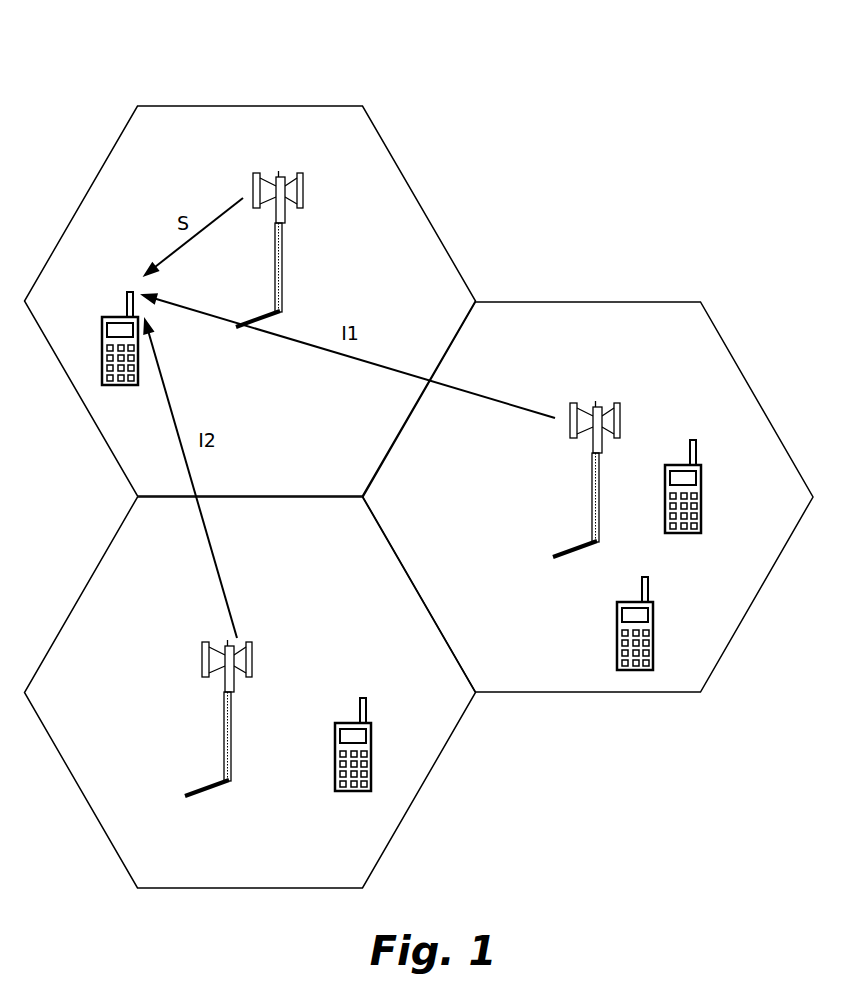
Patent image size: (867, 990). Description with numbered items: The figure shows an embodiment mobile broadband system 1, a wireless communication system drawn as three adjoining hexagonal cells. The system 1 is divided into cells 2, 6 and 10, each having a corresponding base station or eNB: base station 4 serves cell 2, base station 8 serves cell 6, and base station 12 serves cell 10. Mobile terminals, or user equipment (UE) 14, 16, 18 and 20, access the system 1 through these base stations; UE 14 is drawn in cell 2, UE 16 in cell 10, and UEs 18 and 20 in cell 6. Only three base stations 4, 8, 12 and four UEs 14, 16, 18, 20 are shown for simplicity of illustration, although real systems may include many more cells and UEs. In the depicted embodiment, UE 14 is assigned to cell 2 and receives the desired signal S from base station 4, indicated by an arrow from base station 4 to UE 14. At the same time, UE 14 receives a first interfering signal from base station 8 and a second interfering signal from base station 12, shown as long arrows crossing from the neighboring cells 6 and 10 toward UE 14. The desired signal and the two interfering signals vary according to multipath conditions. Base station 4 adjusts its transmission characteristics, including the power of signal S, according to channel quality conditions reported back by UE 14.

The mobile broadband system 1 is at (140, 48).
The cell 2 is at (250, 301).
The cell 6 is at (588, 497).
The cell 10 is at (250, 692).
The base station 4 is at (282, 302).
The base station 8 is at (598, 525).
The base station 12 is at (232, 750).
The user equipment 14 is at (101, 366).
The user equipment 16 is at (373, 780).
The user equipment 18 is at (655, 657).
The user equipment 20 is at (703, 520).